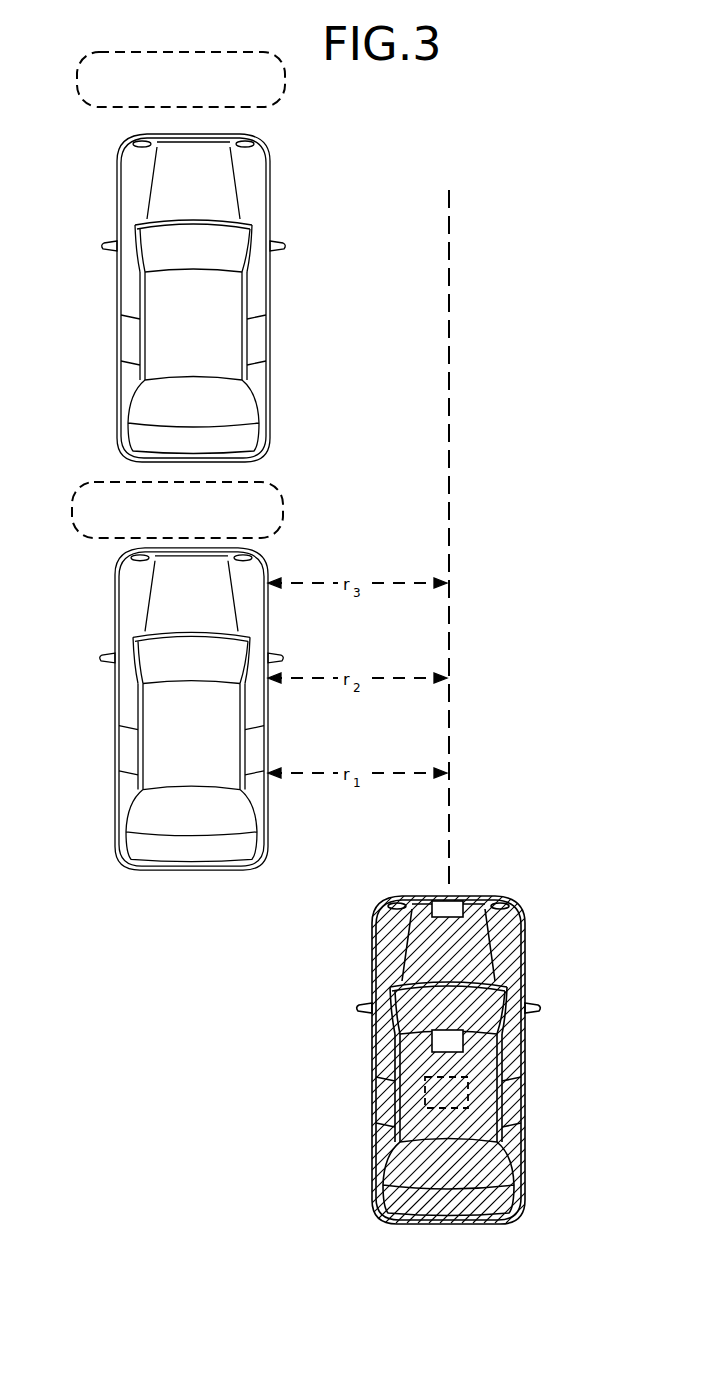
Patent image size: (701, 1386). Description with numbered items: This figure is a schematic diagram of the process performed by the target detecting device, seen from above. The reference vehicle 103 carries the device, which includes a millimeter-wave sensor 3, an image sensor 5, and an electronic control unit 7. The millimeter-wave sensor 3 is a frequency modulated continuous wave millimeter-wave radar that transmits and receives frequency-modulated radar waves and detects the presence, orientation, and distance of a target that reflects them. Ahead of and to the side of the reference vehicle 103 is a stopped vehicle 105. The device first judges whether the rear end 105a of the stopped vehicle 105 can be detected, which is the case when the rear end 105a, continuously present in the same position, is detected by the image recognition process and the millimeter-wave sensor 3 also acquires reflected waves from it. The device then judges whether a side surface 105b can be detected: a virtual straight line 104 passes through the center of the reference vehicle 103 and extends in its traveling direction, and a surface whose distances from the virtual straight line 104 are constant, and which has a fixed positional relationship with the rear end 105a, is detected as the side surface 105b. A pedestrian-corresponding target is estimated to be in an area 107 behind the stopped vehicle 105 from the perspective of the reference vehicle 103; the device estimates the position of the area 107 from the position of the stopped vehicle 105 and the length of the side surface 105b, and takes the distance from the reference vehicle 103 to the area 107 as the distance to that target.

The millimeter-wave sensor 3 is at (455, 895).
The image sensor 5 is at (463, 1037).
The electronic control unit (ECU) 7 is at (468, 1091).
The reference vehicle 103 is at (525, 926).
The virtual straight line 104 is at (450, 313).
The stopped vehicle 105 is at (112, 278).
The rear end of stopped vehicle 105a is at (216, 870).
The side surface of stopped vehicle 105b is at (267, 262).
The area 107 is at (102, 52).